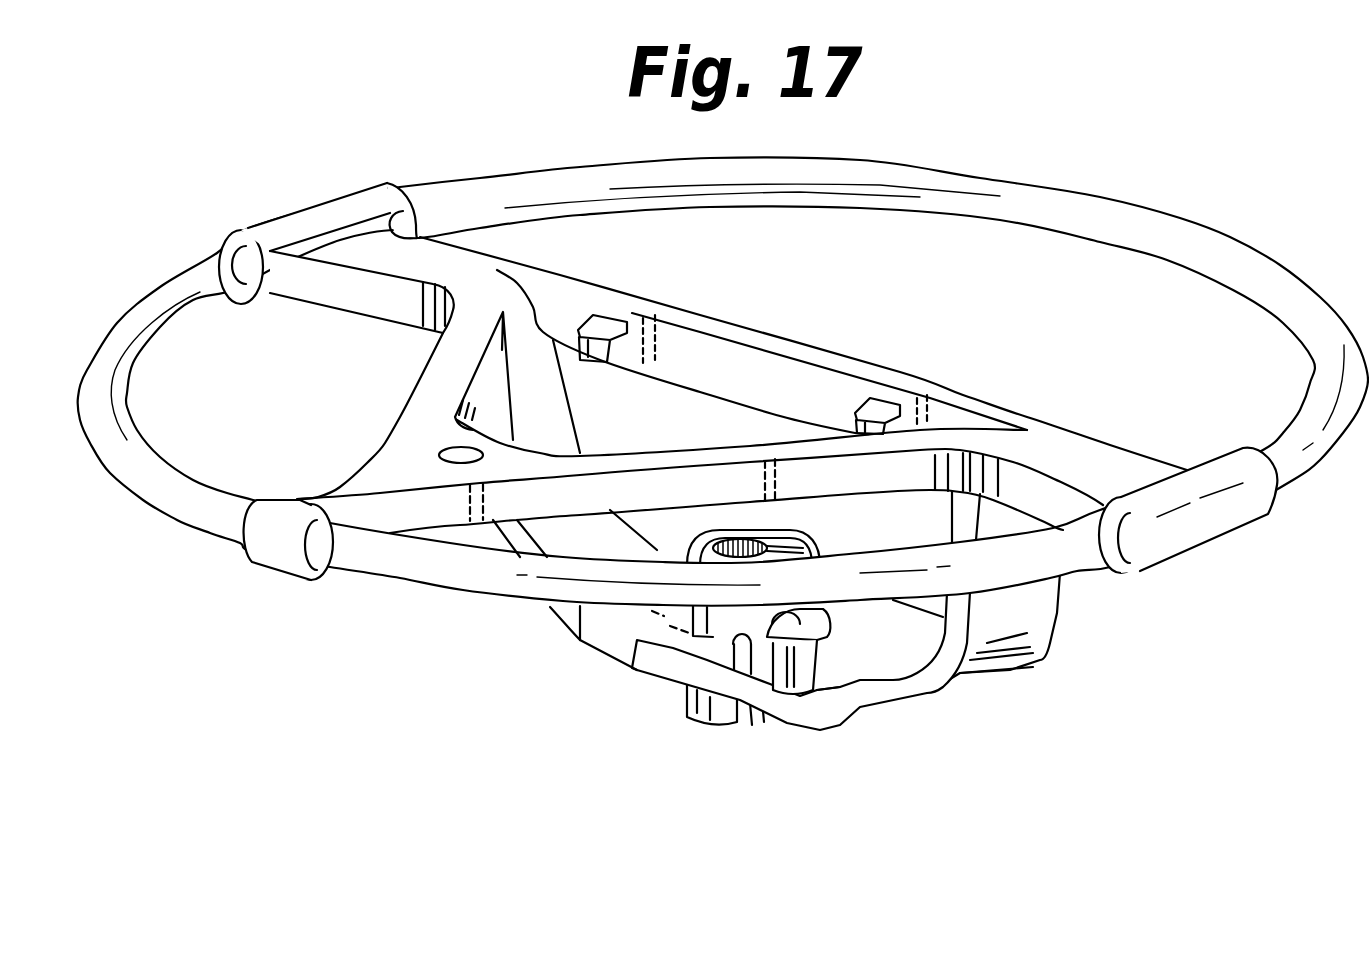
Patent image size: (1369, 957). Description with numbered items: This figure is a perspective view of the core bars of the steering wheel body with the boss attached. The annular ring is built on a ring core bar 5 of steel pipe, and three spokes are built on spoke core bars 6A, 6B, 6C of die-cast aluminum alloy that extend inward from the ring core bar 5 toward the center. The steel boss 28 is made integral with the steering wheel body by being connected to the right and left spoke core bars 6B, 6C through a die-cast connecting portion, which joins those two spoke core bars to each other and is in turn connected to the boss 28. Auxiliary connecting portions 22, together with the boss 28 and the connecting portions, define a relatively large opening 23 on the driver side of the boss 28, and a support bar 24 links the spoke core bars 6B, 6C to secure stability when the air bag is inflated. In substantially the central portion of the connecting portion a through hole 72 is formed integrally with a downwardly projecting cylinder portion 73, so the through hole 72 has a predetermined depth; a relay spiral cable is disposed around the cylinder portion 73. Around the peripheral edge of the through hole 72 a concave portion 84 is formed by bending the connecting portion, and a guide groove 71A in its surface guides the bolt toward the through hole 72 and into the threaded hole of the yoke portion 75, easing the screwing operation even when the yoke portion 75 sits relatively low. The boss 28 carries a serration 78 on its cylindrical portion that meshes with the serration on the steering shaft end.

The ring core bar 5 is at (1111, 203).
The spoke core bar 6A is at (336, 493).
The spoke core bar 6B is at (345, 298).
The spoke core bar 6C is at (1103, 446).
The auxiliary connecting portion 22 is at (480, 382).
The opening 23 is at (637, 657).
The support bar 24 is at (888, 377).
The boss 28 is at (700, 757).
The guide groove 71A is at (805, 683).
The through hole 72 is at (747, 637).
The cylinder portion 73 is at (682, 703).
The yoke portion 75 is at (780, 532).
The serration 78 is at (713, 537).
The concave portion 84 is at (662, 620).